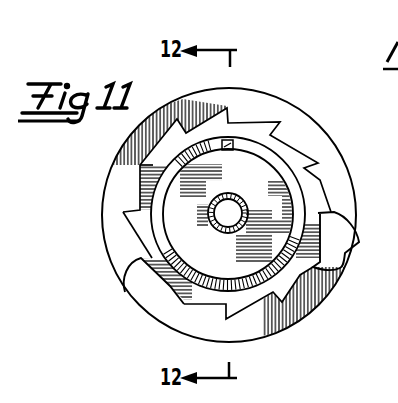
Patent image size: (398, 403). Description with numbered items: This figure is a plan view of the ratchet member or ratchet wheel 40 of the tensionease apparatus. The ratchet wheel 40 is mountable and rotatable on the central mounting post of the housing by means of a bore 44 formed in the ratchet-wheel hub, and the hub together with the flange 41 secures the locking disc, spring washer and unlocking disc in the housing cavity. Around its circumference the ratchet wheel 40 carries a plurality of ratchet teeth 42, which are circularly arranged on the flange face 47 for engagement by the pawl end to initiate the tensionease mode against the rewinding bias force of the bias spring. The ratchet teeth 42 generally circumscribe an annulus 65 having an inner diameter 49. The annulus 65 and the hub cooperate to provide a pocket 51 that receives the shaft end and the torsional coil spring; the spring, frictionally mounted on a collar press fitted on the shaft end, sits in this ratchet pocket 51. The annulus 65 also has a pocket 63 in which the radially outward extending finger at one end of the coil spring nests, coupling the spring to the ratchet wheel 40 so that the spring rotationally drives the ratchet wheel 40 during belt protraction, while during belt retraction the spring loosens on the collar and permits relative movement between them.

The ratchet member 40 is at (338, 103).
The flange 41 is at (118, 194).
The ratchet teeth 42 is at (172, 293).
The bore 44 is at (231, 229).
The flange face 47 is at (110, 251).
The inner diameter 49 is at (253, 157).
The pocket 51 is at (281, 220).
The pocket 63 is at (227, 150).
The annulus 65 is at (168, 205).